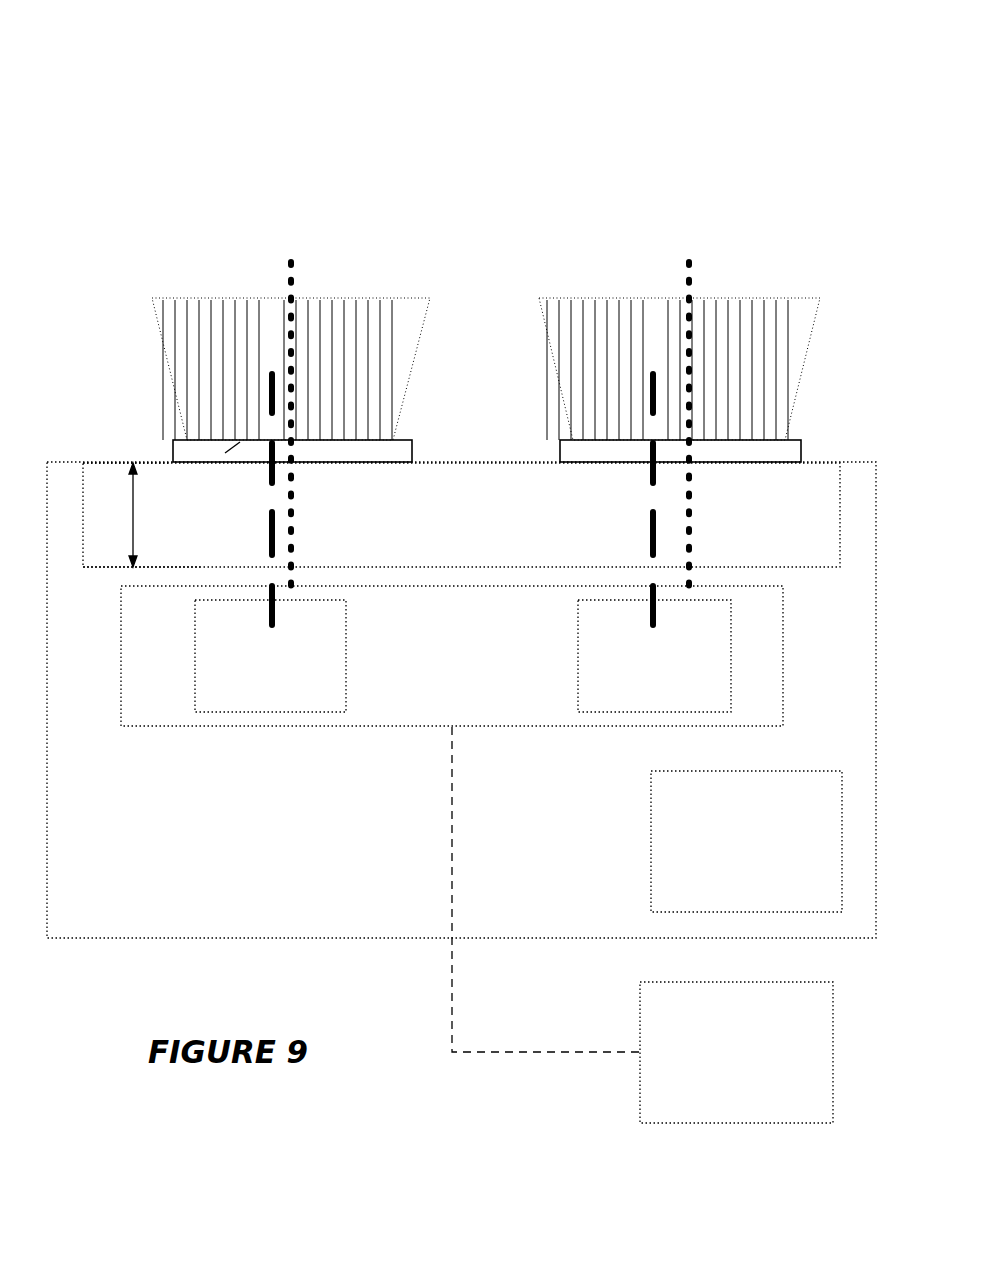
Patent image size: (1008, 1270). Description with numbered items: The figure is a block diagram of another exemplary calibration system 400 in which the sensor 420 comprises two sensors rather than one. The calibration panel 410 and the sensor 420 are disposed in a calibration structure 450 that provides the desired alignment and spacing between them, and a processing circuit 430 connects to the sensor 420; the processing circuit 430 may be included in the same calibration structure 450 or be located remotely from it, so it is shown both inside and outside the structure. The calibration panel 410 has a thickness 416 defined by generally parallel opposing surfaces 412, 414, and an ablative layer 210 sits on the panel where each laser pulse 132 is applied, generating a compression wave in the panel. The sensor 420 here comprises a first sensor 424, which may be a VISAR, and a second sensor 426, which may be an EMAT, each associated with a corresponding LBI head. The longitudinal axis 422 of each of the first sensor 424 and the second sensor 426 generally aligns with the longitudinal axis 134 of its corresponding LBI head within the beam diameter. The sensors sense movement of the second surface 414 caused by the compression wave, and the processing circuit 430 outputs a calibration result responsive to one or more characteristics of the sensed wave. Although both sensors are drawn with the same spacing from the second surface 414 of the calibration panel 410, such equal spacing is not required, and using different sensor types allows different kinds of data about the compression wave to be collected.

The calibration system 400 is at (226, 145).
The laser pulse 132 is at (230, 337).
The longitudinal axis of the LBI head 134 is at (296, 259).
The longitudinal axis of the sensor 422 is at (268, 400).
The ablative layer 210 is at (395, 452).
The first surface of the calibration panel 412 is at (112, 462).
The second surface of the calibration panel 414 is at (118, 568).
The thickness of the calibration panel 416 is at (156, 515).
The calibration panel 410 is at (481, 554).
The sensor 420 is at (173, 690).
The first sensor 424 is at (290, 681).
The second sensor 426 is at (672, 682).
The processing circuit 430 is at (756, 1092).
The calibration structure 450 is at (256, 901).